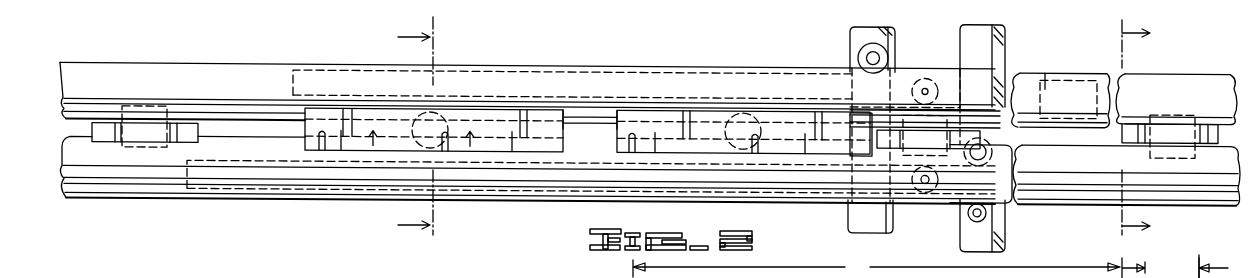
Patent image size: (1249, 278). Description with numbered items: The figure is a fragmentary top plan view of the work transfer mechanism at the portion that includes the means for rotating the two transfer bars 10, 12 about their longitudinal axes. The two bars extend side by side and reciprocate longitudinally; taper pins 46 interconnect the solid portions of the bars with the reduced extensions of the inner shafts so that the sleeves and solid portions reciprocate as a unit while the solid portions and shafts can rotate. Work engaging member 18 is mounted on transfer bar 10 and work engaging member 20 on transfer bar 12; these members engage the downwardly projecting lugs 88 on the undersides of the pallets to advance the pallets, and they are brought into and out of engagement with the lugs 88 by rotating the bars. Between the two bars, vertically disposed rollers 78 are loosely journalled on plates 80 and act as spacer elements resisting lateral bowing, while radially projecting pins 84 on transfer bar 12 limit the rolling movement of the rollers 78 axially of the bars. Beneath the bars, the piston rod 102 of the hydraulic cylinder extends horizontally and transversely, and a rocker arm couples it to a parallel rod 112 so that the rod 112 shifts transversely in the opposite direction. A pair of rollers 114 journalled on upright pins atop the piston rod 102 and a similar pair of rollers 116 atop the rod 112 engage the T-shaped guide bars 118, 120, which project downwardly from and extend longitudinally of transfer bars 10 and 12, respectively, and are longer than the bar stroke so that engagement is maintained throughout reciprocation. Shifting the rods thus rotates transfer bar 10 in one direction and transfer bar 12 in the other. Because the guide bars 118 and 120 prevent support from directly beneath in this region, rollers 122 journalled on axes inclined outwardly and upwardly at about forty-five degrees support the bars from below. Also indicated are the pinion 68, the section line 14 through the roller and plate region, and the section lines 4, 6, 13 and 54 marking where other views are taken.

The transfer bar 10 is at (258, 70).
The transfer bar 12 is at (170, 181).
The locating pins 14 is at (470, 129).
The work engaging member 18 is at (1130, 117).
The work engaging member 20 is at (190, 136).
The taper pin 46 is at (1048, 70).
The roller 78 is at (450, 115).
The plate 80 is at (560, 108).
The radially projecting pin 84 is at (305, 146).
The lug 88 is at (153, 112).
The piston rod 102 is at (862, 219).
The rod 112 is at (1000, 236).
The roller 114 is at (855, 52).
The roller 116 is at (990, 143).
The T-shaped guide bar 118 is at (518, 76).
The T-shaped guide bar 120 is at (296, 188).
The roller 122 is at (927, 75).
The section line 4- 4 is at (404, 132).
The section line 13- 13 is at (1148, 128).
The dimension 54 is at (889, 263).
The pinion 68 is at (1198, 266).
The section line 6 is at (1209, 262).